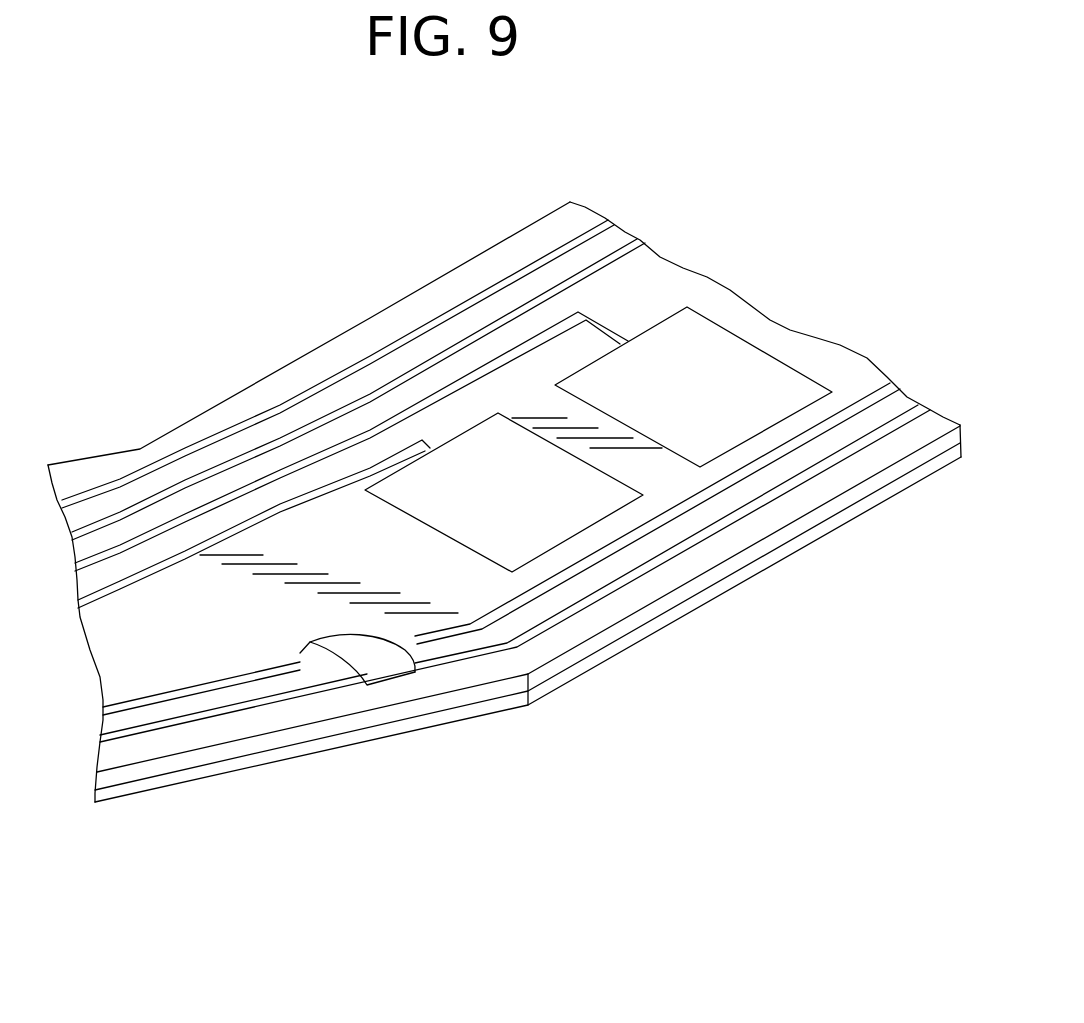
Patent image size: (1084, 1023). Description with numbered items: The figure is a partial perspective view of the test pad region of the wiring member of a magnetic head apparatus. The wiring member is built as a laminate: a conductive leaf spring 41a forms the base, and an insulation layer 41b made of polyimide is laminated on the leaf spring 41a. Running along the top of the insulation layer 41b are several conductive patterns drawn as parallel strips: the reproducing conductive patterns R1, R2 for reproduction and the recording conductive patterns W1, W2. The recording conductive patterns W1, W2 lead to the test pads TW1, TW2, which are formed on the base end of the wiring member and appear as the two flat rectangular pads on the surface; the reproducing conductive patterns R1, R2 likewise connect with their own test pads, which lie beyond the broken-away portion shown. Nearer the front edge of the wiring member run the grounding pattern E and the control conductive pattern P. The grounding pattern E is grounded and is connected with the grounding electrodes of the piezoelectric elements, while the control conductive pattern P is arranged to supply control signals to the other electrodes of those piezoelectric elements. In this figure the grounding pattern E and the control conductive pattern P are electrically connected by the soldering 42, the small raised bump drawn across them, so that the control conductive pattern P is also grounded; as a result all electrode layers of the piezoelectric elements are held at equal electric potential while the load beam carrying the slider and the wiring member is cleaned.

The conductive leaf spring 41a is at (668, 623).
The insulation layer 41b is at (563, 660).
The soldering 42 is at (385, 670).
The grounding pattern E is at (253, 678).
The control conductive pattern P is at (170, 725).
The reproducing conductive pattern R1 is at (313, 390).
The reproducing conductive pattern R2 is at (263, 445).
The recording conductive pattern W1 is at (195, 512).
The recording conductive pattern W2 is at (123, 583).
The test pad TW1 is at (672, 340).
The test pad TW2 is at (478, 460).